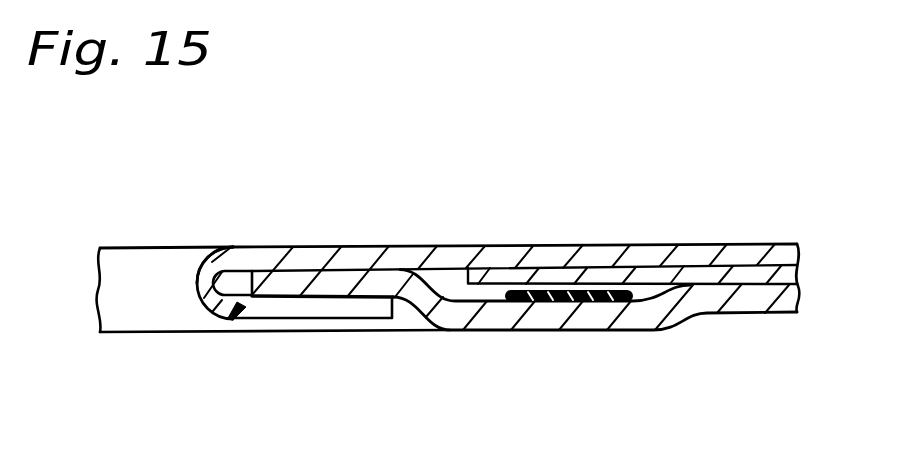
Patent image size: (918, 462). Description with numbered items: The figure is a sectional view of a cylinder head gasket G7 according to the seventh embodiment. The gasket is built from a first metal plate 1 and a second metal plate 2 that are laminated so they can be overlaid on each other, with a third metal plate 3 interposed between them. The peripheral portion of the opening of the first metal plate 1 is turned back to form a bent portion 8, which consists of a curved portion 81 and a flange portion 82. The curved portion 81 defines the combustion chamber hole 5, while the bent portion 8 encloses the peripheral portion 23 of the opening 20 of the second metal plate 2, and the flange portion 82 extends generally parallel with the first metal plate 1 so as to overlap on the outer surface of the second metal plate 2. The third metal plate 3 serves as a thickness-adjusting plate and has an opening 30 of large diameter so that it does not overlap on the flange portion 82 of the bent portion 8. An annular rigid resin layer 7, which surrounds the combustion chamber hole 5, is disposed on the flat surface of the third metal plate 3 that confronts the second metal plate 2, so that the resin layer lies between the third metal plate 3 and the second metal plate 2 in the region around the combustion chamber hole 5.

The combustion chamber hole 5 is at (166, 270).
The opening 20 is at (241, 271).
The peripheral portion 23 is at (318, 275).
The opening 30 is at (447, 272).
The cylinder head gasket G7 is at (556, 228).
The first metal plate 1 is at (707, 255).
The third metal plate 3 is at (790, 279).
The annular rigid resin layer 7 is at (582, 303).
The second metal plate 2 is at (747, 300).
The curved portion 81 is at (200, 288).
The bent portion 8 is at (238, 312).
The flange portion 82 is at (319, 306).